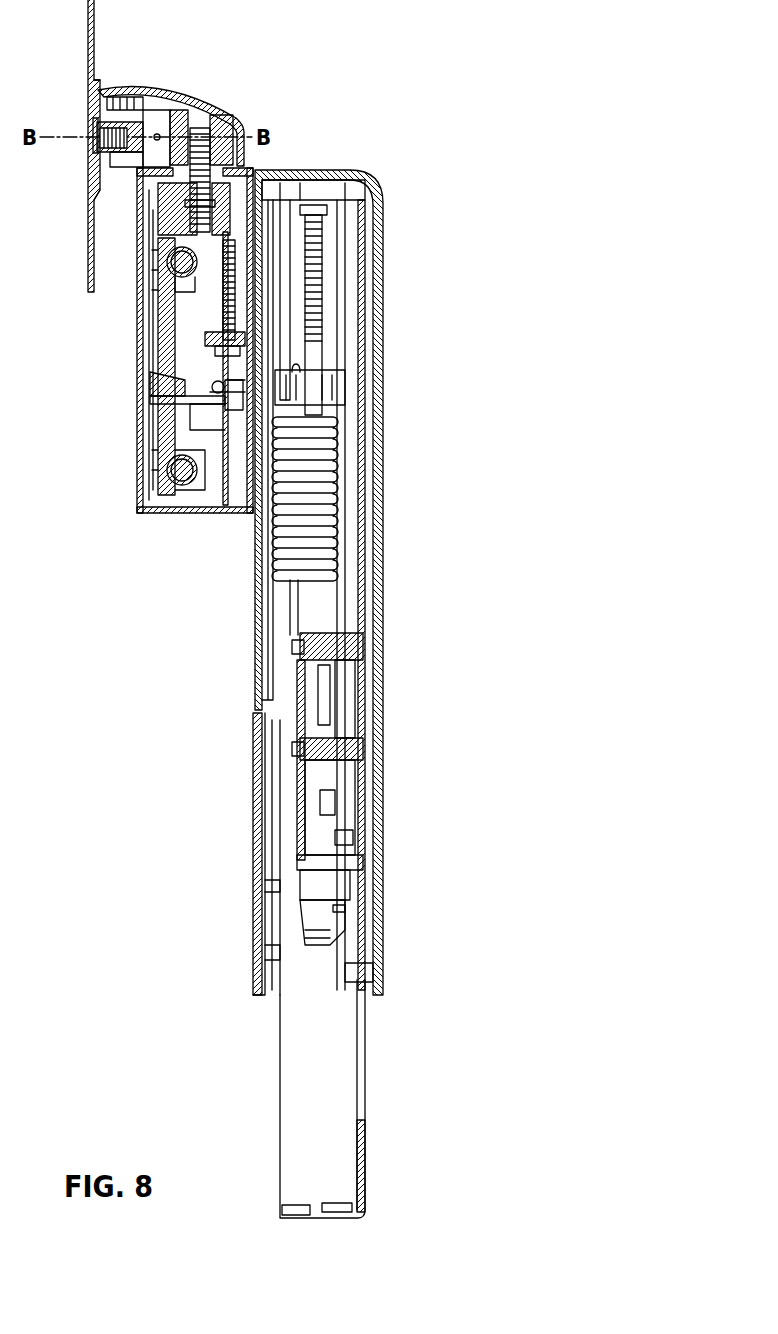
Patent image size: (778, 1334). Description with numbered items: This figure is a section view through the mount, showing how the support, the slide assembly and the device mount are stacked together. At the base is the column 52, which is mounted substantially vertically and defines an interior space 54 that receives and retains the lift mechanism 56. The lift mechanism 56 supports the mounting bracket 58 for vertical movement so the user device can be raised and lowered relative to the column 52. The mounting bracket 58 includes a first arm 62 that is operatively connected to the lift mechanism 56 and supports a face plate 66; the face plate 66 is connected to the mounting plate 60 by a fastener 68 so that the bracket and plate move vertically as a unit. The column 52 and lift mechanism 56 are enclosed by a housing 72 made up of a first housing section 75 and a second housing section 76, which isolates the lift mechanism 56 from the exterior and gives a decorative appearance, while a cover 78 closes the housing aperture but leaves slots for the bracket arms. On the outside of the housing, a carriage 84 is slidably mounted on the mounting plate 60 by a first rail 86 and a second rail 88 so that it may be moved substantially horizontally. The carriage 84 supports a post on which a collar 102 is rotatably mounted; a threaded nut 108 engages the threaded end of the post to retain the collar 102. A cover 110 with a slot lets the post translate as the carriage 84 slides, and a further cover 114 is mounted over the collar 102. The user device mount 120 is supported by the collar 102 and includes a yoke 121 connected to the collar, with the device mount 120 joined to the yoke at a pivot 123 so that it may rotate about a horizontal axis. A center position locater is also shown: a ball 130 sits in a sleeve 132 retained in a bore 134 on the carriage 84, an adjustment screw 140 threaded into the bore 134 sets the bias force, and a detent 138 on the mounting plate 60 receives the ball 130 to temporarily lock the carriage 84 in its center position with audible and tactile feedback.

The column 52 is at (362, 1082).
The interior space 54 is at (326, 1042).
The lift mechanism 56 is at (327, 606).
The mounting bracket 58 is at (246, 207).
The mounting plate 60 is at (230, 505).
The first arm 62 is at (262, 268).
The face plate 66 is at (256, 292).
The fastener 68 is at (227, 332).
The housing 72 is at (378, 164).
The first housing section 75 is at (383, 360).
The second housing section 76 is at (256, 800).
The cover 78 is at (258, 678).
The carriage 84 is at (160, 424).
The first rail 86 is at (183, 500).
The second rail 88 is at (183, 295).
The collar 102 is at (150, 112).
The threaded nut 108 is at (230, 172).
The cover 110 is at (190, 220).
The cover 114 is at (124, 90).
The user device mount 120 is at (97, 36).
The yoke 121 is at (103, 178).
The pivot 123 is at (73, 142).
The ball 130 is at (238, 380).
The sleeve 132 is at (198, 395).
The bore 134 is at (212, 345).
The detent 138 is at (230, 398).
The adjustment screw 140 is at (150, 398).